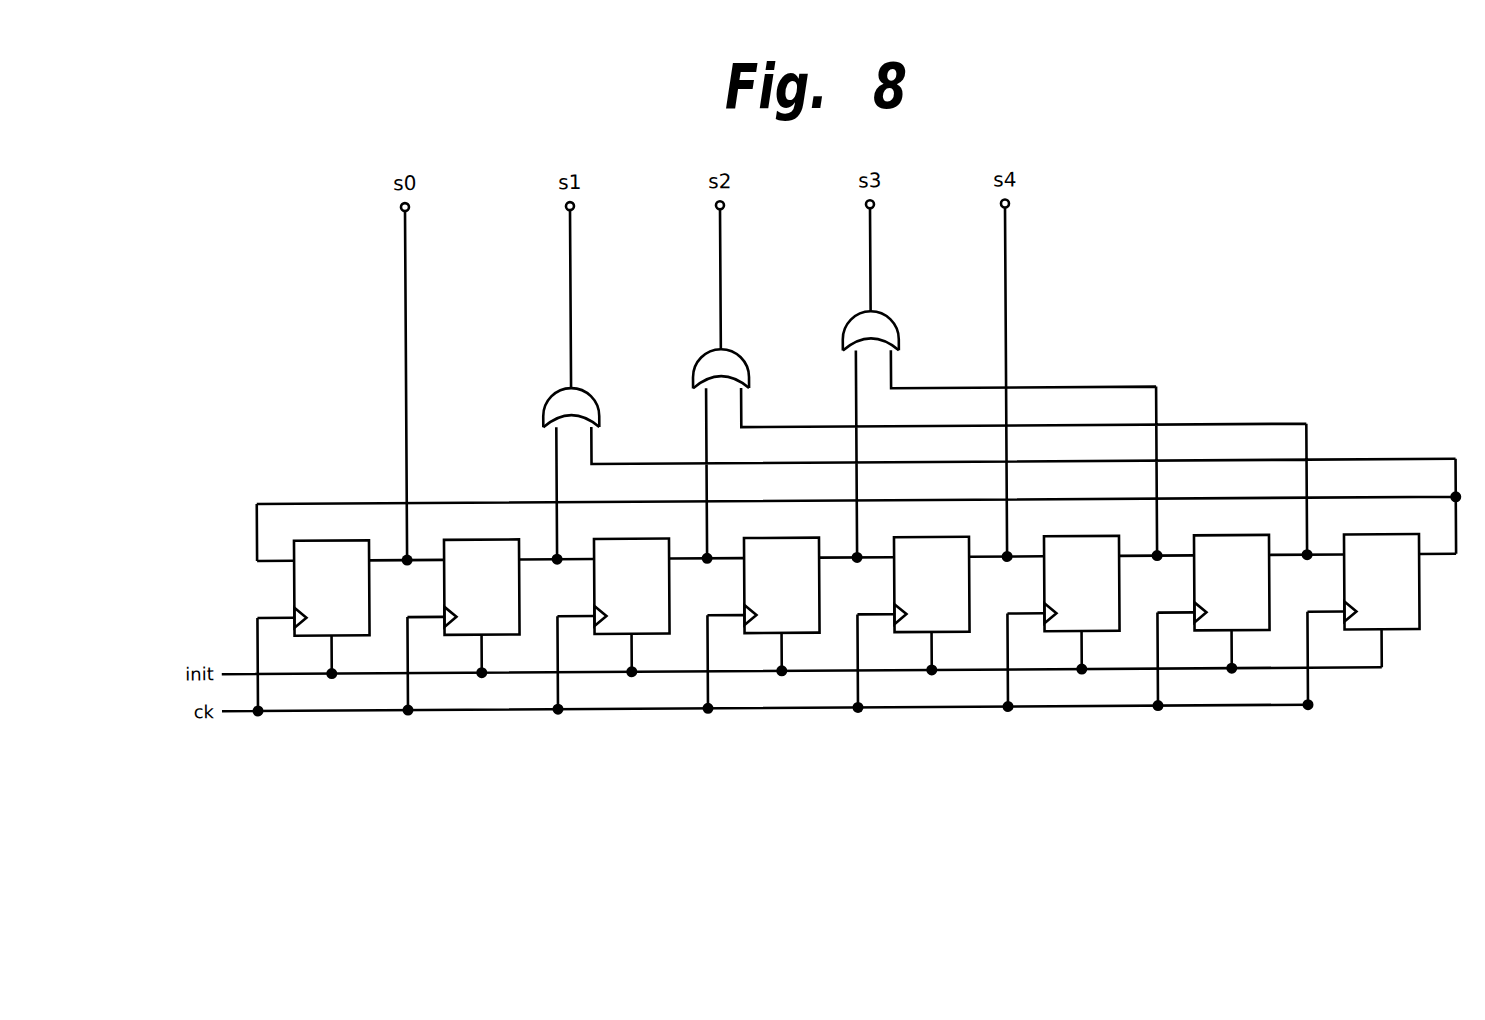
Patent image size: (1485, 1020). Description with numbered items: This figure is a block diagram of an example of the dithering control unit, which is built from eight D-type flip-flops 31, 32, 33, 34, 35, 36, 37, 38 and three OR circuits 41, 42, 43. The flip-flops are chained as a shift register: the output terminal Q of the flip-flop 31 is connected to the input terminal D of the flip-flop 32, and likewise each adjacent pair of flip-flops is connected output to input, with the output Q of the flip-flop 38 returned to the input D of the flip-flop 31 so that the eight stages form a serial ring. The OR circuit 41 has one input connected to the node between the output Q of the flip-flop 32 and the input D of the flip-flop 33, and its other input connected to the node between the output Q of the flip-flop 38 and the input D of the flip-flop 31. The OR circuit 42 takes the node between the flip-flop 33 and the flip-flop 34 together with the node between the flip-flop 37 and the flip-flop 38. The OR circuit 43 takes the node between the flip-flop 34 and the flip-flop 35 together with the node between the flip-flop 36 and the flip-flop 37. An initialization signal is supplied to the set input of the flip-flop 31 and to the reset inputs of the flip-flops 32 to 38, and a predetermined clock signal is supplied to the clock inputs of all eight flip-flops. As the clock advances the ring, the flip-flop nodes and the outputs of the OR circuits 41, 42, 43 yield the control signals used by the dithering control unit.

The D-type flip-flop 31 is at (333, 541).
The D-type flip-flop 32 is at (483, 541).
The D-type flip-flop 33 is at (633, 541).
The D-type flip-flop 34 is at (783, 541).
The D-type flip-flop 35 is at (933, 541).
The D-type flip-flop 36 is at (1083, 541).
The D-type flip-flop 37 is at (1233, 541).
The D-type flip-flop 38 is at (1383, 541).
The OR circuit 41 is at (595, 401).
The OR circuit 42 is at (744, 361).
The OR circuit 43 is at (894, 324).